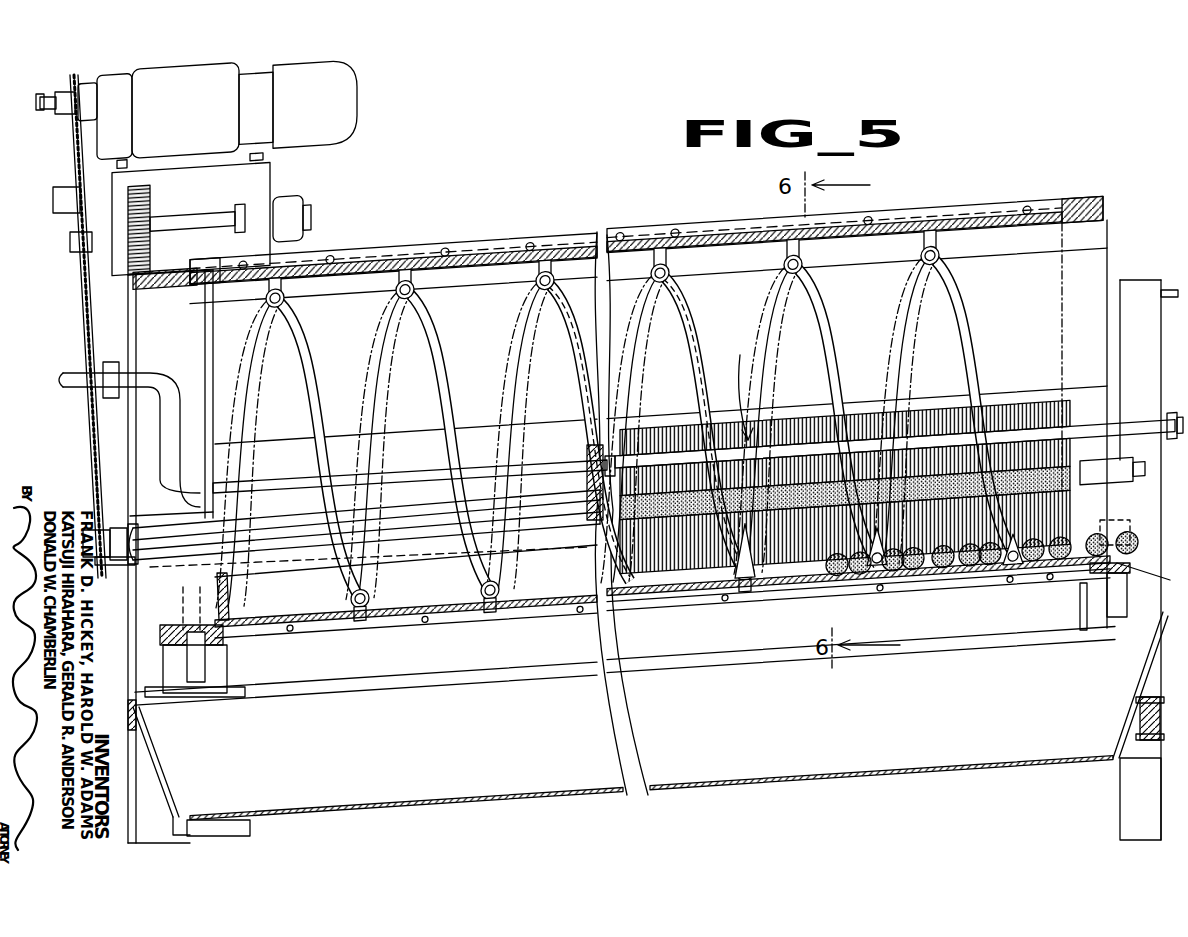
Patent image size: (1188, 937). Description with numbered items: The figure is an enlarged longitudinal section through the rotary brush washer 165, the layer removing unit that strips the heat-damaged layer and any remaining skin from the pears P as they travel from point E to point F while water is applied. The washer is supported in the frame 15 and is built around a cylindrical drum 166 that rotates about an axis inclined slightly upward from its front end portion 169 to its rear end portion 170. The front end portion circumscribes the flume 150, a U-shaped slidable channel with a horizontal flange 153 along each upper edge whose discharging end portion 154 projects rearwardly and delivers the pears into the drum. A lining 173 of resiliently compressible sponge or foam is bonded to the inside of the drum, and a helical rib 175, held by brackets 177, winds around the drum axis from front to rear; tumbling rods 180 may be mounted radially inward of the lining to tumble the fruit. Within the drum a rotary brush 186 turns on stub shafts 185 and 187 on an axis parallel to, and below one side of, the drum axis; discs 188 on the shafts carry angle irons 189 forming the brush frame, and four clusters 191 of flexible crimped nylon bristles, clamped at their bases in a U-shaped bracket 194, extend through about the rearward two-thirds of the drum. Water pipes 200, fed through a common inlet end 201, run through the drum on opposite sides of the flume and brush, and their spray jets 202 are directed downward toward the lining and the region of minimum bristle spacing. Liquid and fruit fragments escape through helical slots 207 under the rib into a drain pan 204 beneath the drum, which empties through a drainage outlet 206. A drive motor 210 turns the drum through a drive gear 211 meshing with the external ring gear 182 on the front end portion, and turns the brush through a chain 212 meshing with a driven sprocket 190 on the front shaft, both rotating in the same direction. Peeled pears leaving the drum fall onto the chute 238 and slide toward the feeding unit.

The frame 15 is at (1104, 807).
The flume 150 is at (442, 560).
The horizontal flange 153 is at (215, 513).
The discharging end portion 154 is at (590, 610).
The rotary brush washer 165 is at (642, 228).
The cylindrical drum 166 is at (456, 250).
The front end portion 169 is at (148, 347).
The rear end portion 170 is at (1088, 212).
The lining 173 is at (337, 265).
The helical rib 175 is at (440, 336).
The brackets 177 is at (388, 292).
The tumbling rods 180 is at (378, 304).
The external ring gear 182 is at (170, 283).
The stub shaft 185 is at (230, 622).
The rotary brush 186 is at (737, 387).
The stub shaft 187 is at (1110, 470).
The discs 188 is at (140, 528).
The angle irons 189 is at (568, 516).
The driven sprocket 190 is at (100, 527).
The clusters 191 is at (886, 416).
The U-shaped bracket 194 is at (945, 442).
The water pipes 200 is at (405, 478).
The common inlet end 201 is at (85, 380).
The spray jets 202 is at (668, 470).
The drain pan 204 is at (685, 788).
The drainage outlet 206 is at (255, 830).
The helical slots 207 is at (562, 398).
The drive motor 210 is at (152, 120).
The drive gear 211 is at (152, 207).
The chain 212 is at (72, 300).
The chute 238 is at (1138, 620).
The point E is at (577, 583).
The point F is at (1111, 570).
The pears P is at (900, 585).